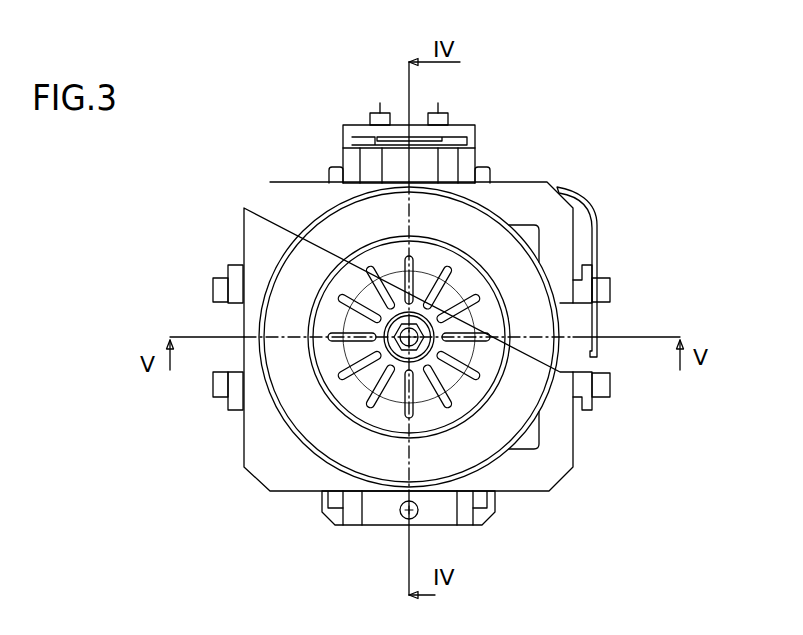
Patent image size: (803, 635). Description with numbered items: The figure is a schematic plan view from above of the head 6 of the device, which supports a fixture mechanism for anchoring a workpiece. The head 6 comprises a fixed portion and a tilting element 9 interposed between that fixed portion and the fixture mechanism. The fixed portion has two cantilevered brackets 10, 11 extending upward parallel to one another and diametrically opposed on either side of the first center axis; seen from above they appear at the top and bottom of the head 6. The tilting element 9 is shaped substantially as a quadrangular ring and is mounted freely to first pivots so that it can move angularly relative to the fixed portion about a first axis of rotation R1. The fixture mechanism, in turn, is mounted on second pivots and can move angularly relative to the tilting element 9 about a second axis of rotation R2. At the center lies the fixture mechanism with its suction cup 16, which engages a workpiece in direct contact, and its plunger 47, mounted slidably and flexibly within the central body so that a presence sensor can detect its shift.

The head 6 is at (208, 443).
The tilting element 9 is at (568, 478).
The cantilevered bracket 10 is at (343, 138).
The cantilevered bracket 11 is at (353, 527).
The suction cup 16 is at (298, 262).
The plunger 47 is at (425, 345).
The first axis of rotation R1 is at (409, 86).
The second axis of rotation R2 is at (195, 337).